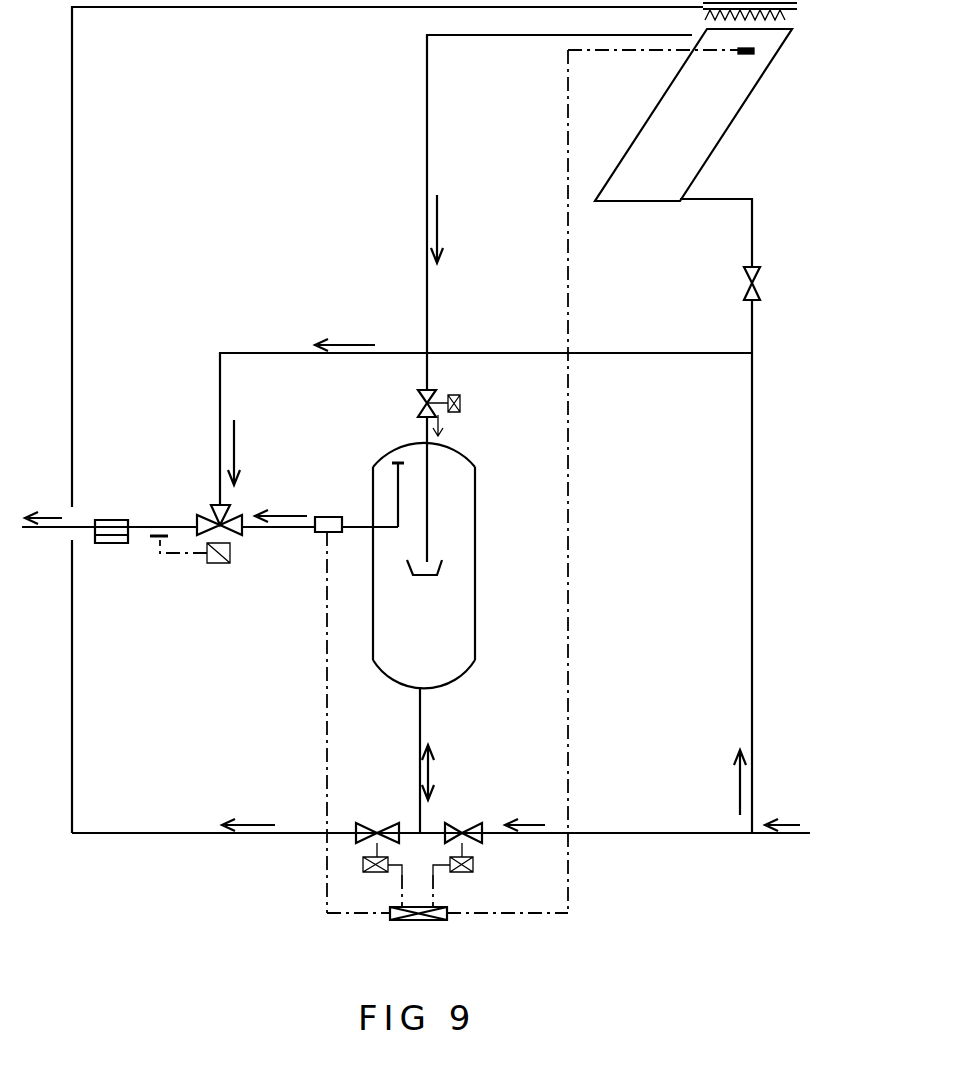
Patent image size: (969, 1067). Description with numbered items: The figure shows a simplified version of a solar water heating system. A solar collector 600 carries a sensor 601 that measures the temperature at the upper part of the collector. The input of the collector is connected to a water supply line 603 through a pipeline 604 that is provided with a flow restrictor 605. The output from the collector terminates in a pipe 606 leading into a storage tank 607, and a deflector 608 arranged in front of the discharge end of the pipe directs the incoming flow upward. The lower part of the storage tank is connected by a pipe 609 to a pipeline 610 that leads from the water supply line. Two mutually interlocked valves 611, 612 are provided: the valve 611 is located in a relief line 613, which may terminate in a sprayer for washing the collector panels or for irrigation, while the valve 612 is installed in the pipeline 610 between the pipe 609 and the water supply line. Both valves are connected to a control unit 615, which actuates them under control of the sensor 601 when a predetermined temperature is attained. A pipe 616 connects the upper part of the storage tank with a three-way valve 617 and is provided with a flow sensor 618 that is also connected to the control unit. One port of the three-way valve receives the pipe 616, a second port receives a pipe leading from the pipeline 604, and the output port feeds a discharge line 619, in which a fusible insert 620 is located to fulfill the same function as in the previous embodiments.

The solar collector 600 is at (732, 127).
The sensor 601 is at (750, 55).
The water supply line 603 is at (757, 815).
The pipeline 604 is at (770, 460).
The flow restrictor 605 is at (757, 278).
The pipe 606 is at (427, 132).
The storage tank 607 is at (470, 458).
The deflector 608 is at (427, 578).
The pipe 609 is at (455, 760).
The pipeline 610 is at (640, 835).
The valve 611 is at (388, 822).
The valve 612 is at (457, 830).
The relief line 613 is at (73, 293).
The control unit 615 is at (420, 921).
The pipe 616 is at (345, 510).
The three-way valve 617 is at (490, 353).
The flow sensor 618 is at (320, 515).
The discharge line 619 is at (62, 512).
The fusible insert 620 is at (107, 520).